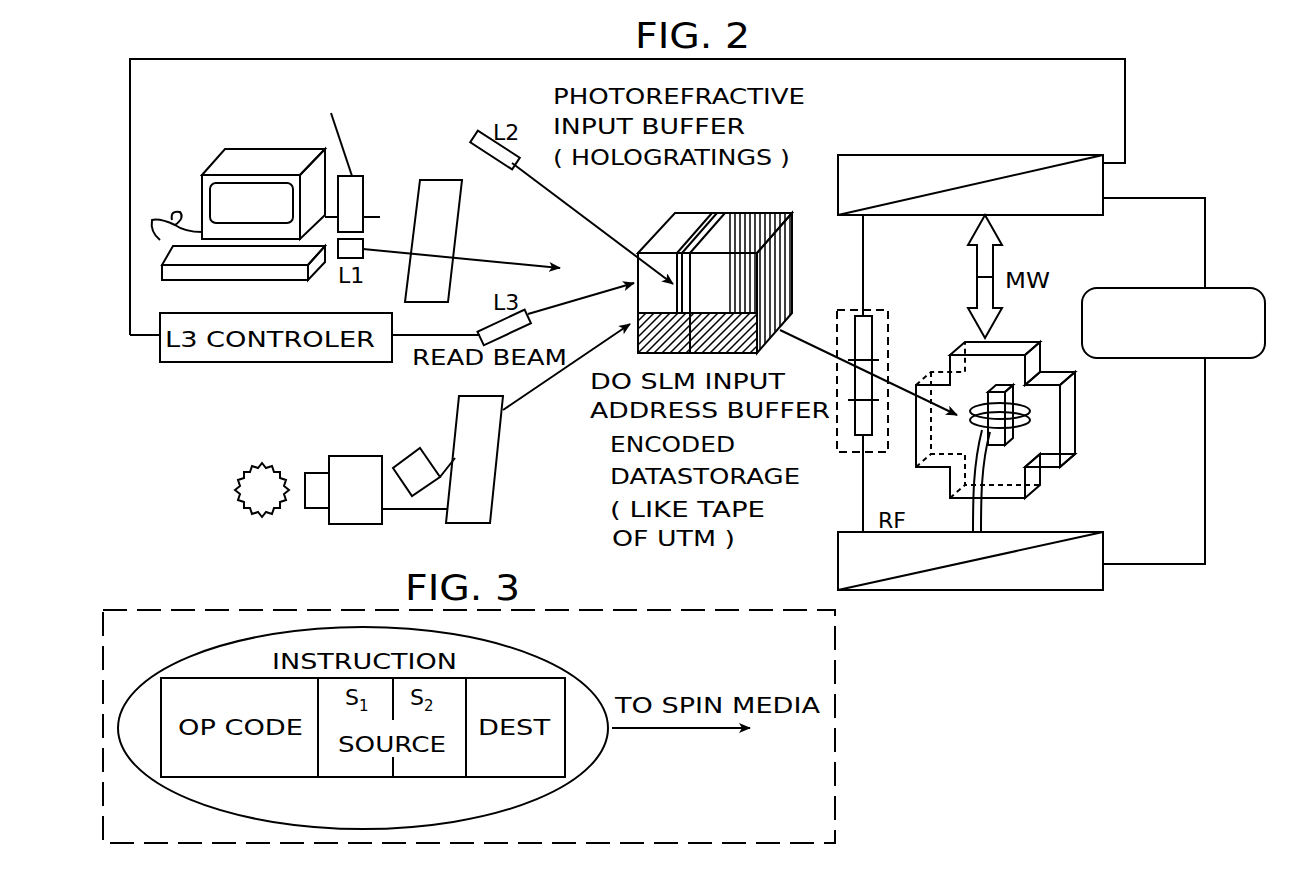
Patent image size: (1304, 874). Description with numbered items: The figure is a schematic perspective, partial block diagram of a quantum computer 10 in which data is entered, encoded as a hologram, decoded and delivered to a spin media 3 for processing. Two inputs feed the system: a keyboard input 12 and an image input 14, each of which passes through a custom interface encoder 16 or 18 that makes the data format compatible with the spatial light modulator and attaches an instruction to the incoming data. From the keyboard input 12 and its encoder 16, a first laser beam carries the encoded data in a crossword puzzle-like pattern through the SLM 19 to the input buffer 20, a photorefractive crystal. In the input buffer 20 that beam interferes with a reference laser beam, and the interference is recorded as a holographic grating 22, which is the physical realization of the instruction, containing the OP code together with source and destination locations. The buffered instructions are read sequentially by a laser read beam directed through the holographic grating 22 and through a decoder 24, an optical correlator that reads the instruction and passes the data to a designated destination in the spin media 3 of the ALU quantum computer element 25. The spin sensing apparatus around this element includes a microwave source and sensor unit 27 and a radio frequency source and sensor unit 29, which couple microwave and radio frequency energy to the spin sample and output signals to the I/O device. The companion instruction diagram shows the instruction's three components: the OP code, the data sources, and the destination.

The optical computing system 10 is at (490, 57).
The keyboard input 12 is at (228, 283).
The image input 14 is at (358, 456).
The custom interface encoder 16 is at (355, 160).
The custom interface encoder 18 is at (500, 490).
The SLM 19 is at (455, 240).
The input buffer 20 is at (695, 264).
The holographic grating 22 is at (697, 213).
The decoder 24 is at (853, 312).
The ALU quantum computer element 25 is at (1083, 420).
The microwave source and sensor 27 is at (888, 162).
The RF source and sensor 29 is at (838, 567).
The spin media 3 is at (878, 314).